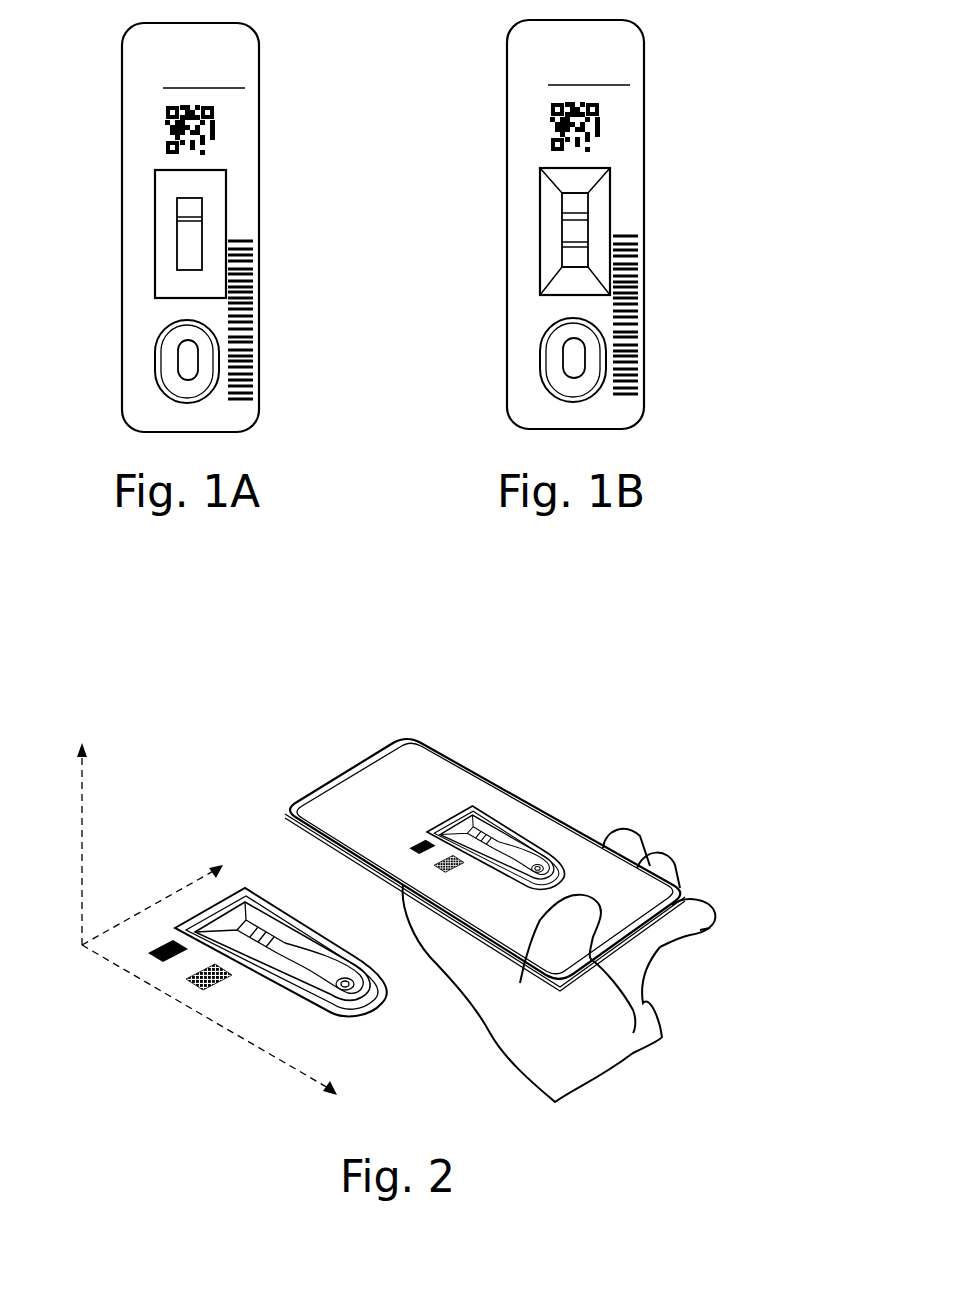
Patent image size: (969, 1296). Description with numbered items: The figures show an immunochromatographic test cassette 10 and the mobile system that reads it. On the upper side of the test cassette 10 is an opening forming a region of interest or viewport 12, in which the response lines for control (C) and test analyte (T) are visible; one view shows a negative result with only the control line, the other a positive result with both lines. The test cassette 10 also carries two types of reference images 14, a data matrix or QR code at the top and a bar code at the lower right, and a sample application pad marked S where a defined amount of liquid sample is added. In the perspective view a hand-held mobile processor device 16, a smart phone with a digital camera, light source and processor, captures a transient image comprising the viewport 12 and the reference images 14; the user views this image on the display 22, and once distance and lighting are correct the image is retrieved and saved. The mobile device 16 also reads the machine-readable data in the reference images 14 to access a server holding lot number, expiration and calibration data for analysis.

In FIG. 1A, the test cassette 10 is at (240, 67).
In FIG. 1B, the test cassette 10 is at (619, 223).
In FIG. 2, the test cassette 10 is at (382, 1000).
In FIG. 1A, the region of interest or viewport 12 is at (193, 240).
In FIG. 1B, the region of interest or viewport 12 is at (636, 228).
In FIG. 2, the region of interest or viewport 12 is at (262, 950).
In FIG. 1A, the reference images 14 is at (166, 130).
In FIG. 1B, the reference images 14 is at (578, 234).
In FIG. 2, the reference images 14 is at (153, 953).
In FIG. 2, the hand-held mobile processor device 16 is at (482, 777).
In FIG. 2, the screen or display 22 is at (500, 917).